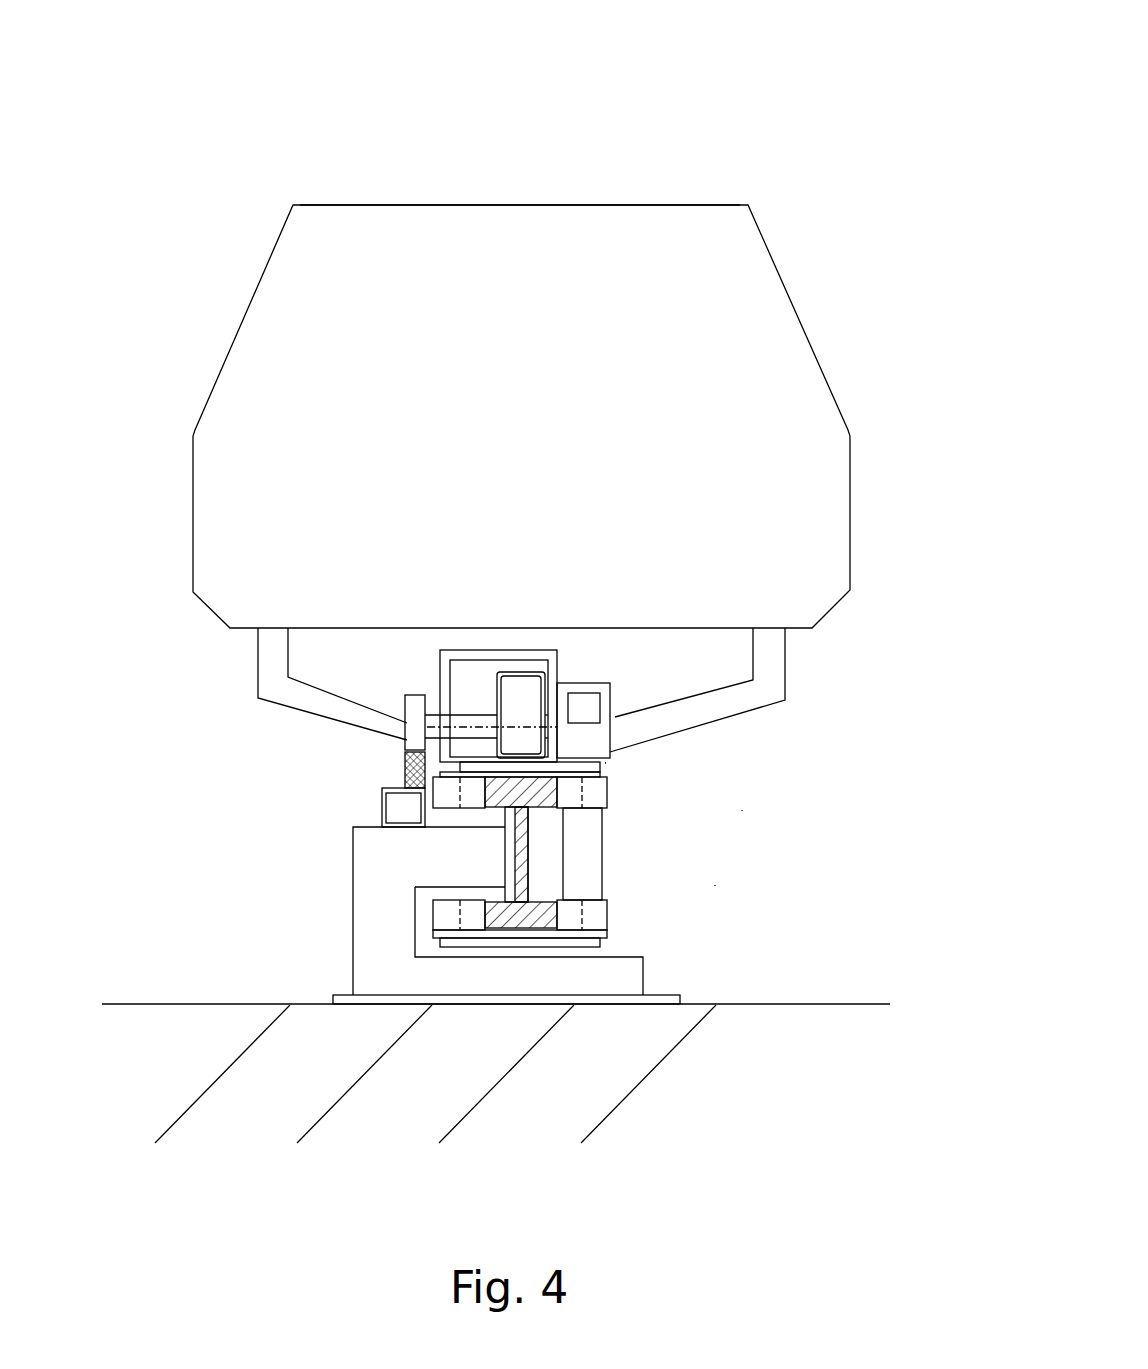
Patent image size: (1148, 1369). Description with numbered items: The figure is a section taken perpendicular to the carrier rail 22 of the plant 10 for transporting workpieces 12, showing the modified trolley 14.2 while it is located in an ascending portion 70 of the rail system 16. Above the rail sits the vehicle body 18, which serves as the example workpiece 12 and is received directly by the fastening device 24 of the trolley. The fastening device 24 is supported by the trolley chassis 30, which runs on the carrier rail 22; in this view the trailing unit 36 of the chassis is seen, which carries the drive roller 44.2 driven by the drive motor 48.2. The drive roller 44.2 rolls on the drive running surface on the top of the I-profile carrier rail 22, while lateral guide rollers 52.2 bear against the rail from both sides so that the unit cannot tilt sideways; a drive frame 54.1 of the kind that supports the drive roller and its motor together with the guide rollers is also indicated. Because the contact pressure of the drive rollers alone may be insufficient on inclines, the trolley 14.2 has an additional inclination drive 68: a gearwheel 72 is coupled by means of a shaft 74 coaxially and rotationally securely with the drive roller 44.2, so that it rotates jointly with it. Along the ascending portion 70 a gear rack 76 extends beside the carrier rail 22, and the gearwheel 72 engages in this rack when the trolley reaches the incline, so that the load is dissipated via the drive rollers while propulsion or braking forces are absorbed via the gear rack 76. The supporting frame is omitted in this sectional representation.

The plant for the transportation of workpieces 10 is at (793, 112).
The workpiece 12 is at (473, 205).
The vehicle body 18 is at (562, 223).
The fastening device 24 is at (793, 672).
The inclination drive 68 is at (427, 663).
The shaft 74 is at (468, 723).
The drive roller 44.2 is at (517, 683).
The drive motor 48.2 is at (585, 685).
The drive frame 54.1 is at (605, 763).
The trolley 14.2 is at (650, 767).
The lateral guide roller 52.2 is at (593, 790).
The rail system 16 is at (742, 810).
The trailing unit 36 is at (613, 852).
The ascending portion 70 is at (715, 885).
The gearwheel 72 is at (405, 735).
The gear rack 76 is at (407, 768).
The carrier rail 22 is at (522, 913).
The trolley chassis 30 is at (583, 965).